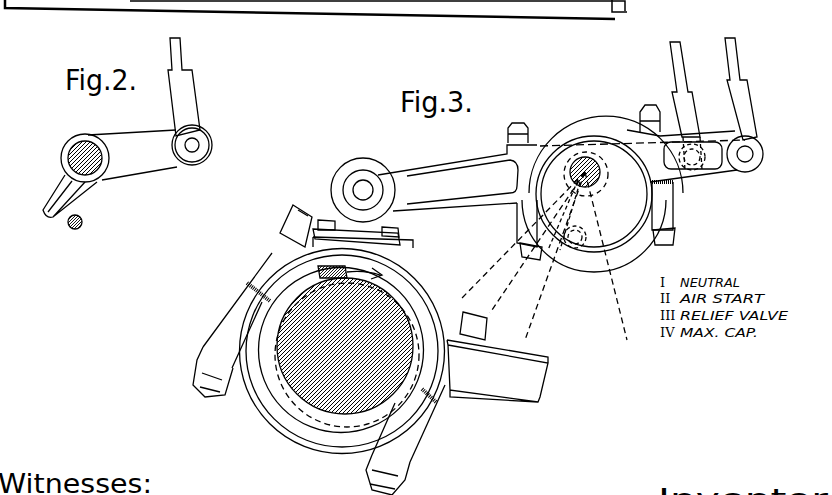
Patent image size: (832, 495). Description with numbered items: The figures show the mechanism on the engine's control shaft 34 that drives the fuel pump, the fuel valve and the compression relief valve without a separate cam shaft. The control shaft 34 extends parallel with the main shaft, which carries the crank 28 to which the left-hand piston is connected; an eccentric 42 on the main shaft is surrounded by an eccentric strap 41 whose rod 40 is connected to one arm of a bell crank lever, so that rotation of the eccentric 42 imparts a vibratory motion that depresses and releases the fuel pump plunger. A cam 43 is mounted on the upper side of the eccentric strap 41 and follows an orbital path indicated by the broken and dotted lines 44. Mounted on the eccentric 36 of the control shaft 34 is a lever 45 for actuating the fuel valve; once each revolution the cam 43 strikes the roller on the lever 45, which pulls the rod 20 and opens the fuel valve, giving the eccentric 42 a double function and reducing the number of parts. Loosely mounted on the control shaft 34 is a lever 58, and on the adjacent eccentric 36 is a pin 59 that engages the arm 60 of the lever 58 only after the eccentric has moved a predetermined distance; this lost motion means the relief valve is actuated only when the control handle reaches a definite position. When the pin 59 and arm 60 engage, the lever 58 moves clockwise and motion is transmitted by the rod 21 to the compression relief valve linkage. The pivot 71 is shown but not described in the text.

In FIG. 3, the pull rod 20 is at (742, 68).
In FIG. 2, the rod 21 is at (188, 59).
In FIG. 3, the rod 21 is at (687, 73).
In FIG. 3, the crank 28 is at (387, 397).
In FIG. 2, the control shaft 34 is at (72, 147).
In FIG. 3, the control shaft 34 is at (583, 157).
In FIG. 3, the eccentric 36 is at (595, 188).
In FIG. 3, the rod 40 is at (502, 388).
In FIG. 3, the eccentric strap 41 is at (295, 426).
In FIG. 3, the eccentric 42 is at (337, 426).
In FIG. 3, the cam 43 is at (403, 231).
In FIG. 3, the orbital motion lines 44 is at (300, 250).
In FIG. 3, the lever 45 is at (457, 178).
In FIG. 2, the lever 58 is at (137, 167).
In FIG. 3, the lever 58 is at (655, 200).
In FIG. 2, the pin 59 is at (77, 229).
In FIG. 3, the pin 59 is at (575, 248).
In FIG. 2, the arm 60 is at (45, 205).
In FIG. 3, the arm 60 is at (530, 229).
In FIG. 3, the pivot 71 is at (363, 160).